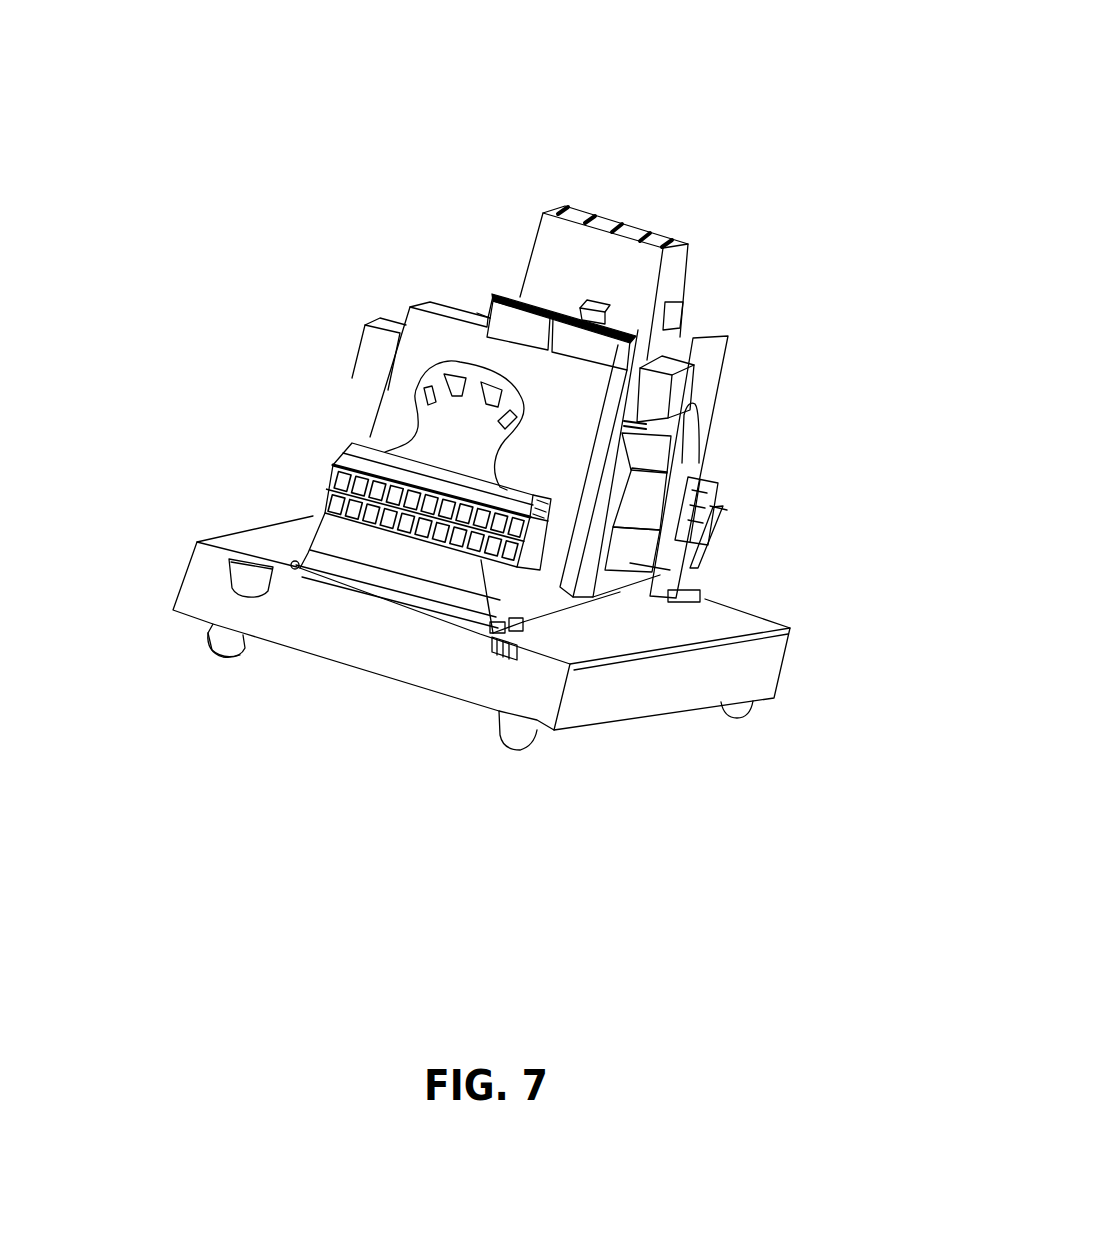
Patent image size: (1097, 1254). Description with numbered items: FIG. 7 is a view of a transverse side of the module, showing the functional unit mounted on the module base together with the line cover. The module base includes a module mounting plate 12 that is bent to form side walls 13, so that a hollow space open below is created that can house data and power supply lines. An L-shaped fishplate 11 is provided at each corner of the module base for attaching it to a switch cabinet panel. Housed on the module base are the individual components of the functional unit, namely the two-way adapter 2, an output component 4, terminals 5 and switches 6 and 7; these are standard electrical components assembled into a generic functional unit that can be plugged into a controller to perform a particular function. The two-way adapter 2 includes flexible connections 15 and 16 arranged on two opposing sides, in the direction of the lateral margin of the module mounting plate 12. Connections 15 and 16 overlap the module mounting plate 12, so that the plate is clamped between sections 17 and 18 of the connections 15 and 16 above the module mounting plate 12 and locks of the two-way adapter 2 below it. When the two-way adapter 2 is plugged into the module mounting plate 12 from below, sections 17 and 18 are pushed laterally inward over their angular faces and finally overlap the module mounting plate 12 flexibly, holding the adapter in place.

The two-way adapter 2 is at (347, 543).
The output component 4 is at (722, 337).
The terminals 5 is at (368, 437).
The switch 6 is at (568, 382).
The switch 7 is at (630, 262).
The L-shaped fishplate 11 is at (215, 652).
The module mounting plate 12 is at (711, 622).
The side walls 13 is at (367, 642).
The flexible connection 15 is at (485, 645).
The flexible connection 16 is at (529, 638).
The section 17 is at (215, 540).
The section 18 is at (525, 622).